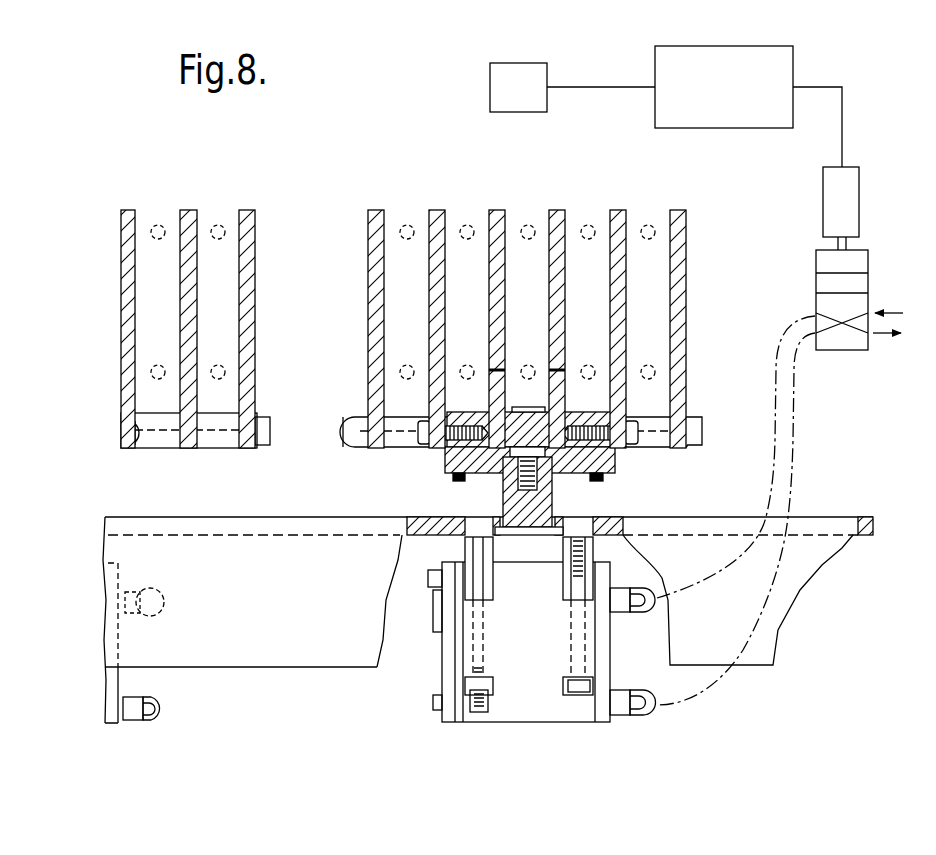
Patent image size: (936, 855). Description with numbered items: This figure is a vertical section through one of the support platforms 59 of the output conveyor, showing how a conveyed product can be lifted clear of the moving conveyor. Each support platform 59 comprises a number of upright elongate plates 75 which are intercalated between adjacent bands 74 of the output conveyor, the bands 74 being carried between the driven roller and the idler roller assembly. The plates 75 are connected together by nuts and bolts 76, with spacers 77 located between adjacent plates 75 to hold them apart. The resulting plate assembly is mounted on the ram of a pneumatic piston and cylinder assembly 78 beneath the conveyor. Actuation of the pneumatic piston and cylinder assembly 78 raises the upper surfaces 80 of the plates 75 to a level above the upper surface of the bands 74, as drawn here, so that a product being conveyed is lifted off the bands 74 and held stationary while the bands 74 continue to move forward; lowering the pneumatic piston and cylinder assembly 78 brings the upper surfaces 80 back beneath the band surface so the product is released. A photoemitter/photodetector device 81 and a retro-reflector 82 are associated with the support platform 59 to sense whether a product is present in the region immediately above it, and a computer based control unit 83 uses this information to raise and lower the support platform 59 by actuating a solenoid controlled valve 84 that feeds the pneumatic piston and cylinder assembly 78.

The support platform 59 is at (429, 346).
The bands 74 is at (218, 225).
The upright elongate plates 75 is at (248, 276).
The nuts and bolts 76 is at (345, 418).
The spacers 77 is at (408, 450).
The pneumatic piston and cylinder assembly 78 is at (612, 650).
The upper surfaces of the plates 80 is at (497, 210).
The photoemitter/photodetector device 81 is at (490, 92).
The retro-reflector 82 is at (528, 410).
The control unit 83 is at (657, 62).
The solenoid controlled valve 84 is at (862, 238).